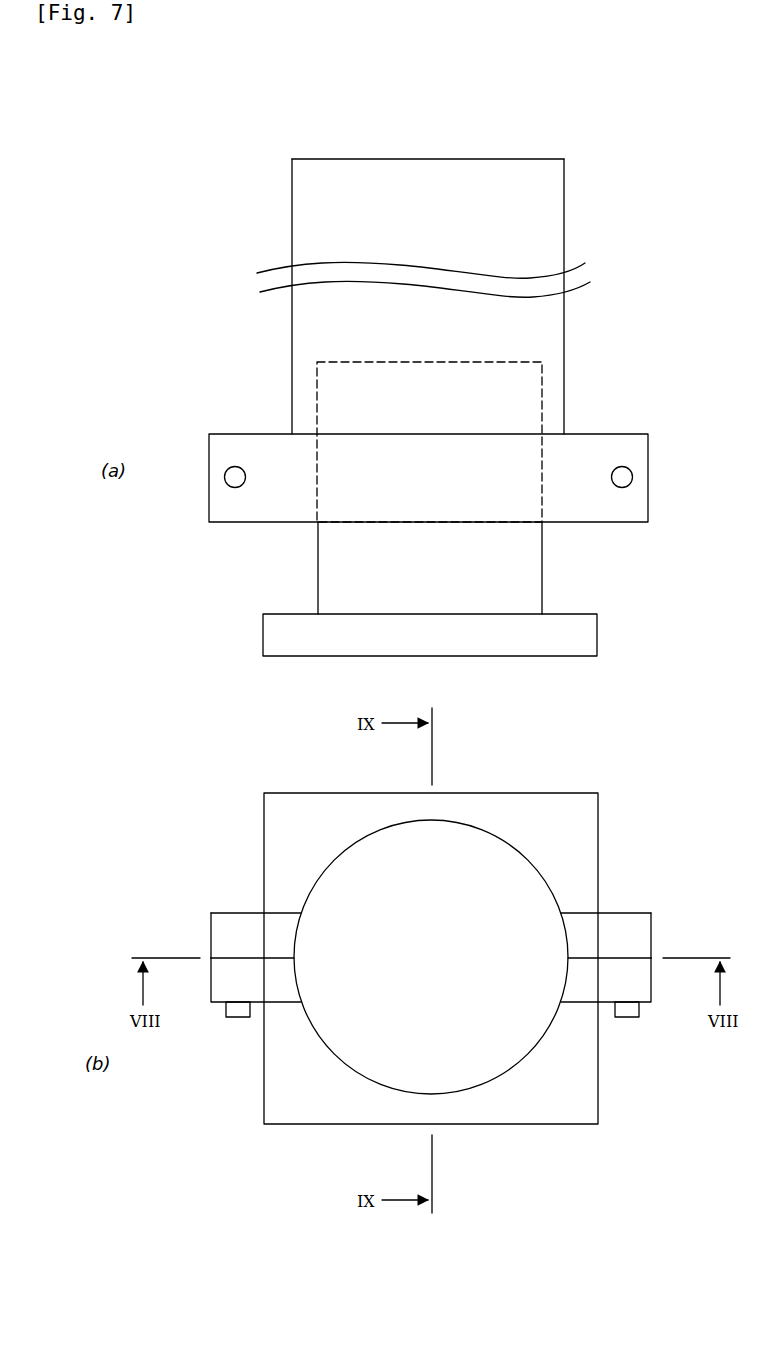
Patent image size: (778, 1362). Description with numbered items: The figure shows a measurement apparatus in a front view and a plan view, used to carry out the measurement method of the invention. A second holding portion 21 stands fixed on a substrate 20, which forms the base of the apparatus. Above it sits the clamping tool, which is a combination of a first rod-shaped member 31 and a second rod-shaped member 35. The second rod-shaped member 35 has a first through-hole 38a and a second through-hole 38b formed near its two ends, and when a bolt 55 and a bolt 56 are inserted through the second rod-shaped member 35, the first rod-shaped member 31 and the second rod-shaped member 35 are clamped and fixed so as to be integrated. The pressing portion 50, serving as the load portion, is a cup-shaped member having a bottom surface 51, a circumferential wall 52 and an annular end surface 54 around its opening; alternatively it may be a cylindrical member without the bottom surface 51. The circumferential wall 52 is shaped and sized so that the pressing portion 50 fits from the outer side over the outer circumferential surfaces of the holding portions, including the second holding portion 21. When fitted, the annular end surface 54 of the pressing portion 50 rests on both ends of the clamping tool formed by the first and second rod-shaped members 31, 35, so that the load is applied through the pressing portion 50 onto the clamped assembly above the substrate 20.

The substrate 20 is at (585, 642).
The second holding portion 21 is at (523, 562).
The first rod-shaped member 31 is at (632, 912).
The second rod-shaped member 35 is at (450, 713).
The first through-hole 38a is at (235, 478).
The second through-hole 38b is at (622, 480).
The pressing portion 50 is at (461, 633).
The bottom surface 51 is at (427, 159).
The circumferential wall 52 is at (537, 220).
The annular end surface 54 is at (293, 447).
The bolt 55 is at (240, 1018).
The bolt 56 is at (627, 1018).